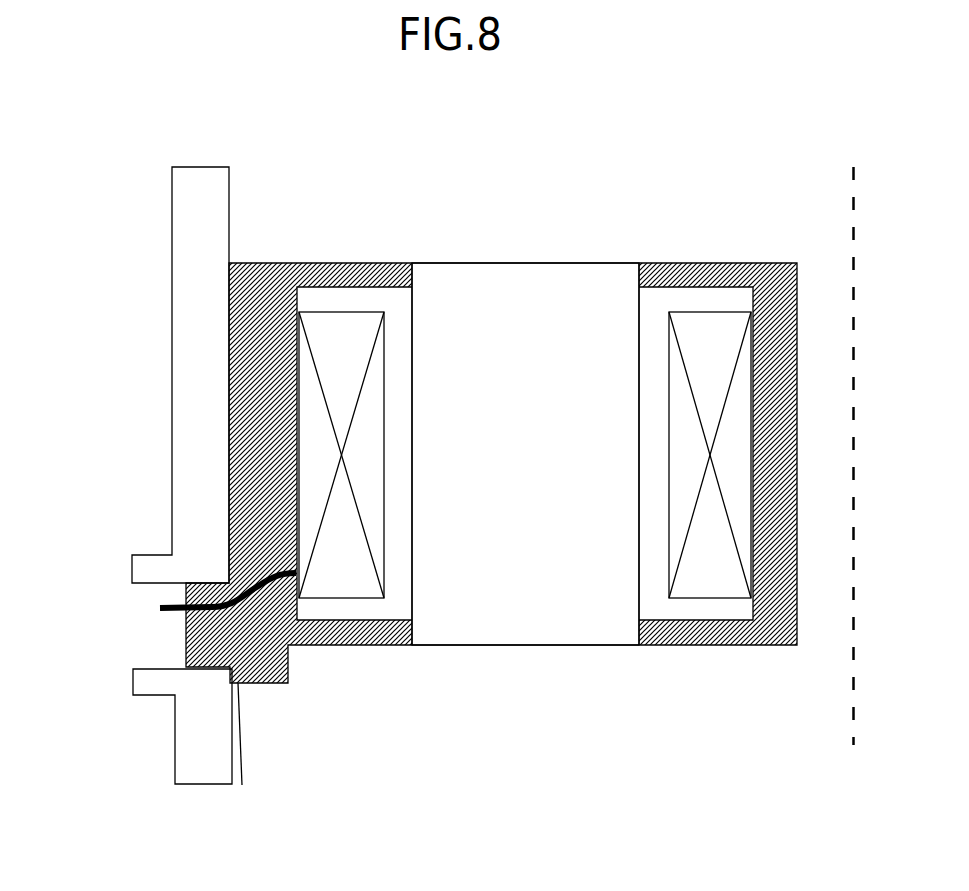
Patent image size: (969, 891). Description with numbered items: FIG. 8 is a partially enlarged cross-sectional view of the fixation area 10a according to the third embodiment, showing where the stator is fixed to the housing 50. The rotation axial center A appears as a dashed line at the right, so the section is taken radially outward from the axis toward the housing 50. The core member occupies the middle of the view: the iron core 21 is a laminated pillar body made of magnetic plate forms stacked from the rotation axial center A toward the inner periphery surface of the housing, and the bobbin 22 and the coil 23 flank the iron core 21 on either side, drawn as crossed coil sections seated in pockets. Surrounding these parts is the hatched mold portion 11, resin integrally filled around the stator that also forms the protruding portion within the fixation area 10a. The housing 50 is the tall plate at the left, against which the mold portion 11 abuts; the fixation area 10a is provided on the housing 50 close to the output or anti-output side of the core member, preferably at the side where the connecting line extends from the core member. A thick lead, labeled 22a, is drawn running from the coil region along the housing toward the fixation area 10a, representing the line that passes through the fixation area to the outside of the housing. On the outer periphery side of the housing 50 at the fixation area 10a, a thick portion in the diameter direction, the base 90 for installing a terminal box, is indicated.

The mold portion 11 is at (287, 263).
The iron core 21 is at (502, 280).
The bobbin 22 is at (680, 298).
The coil 23 is at (339, 323).
The lead wire of coil 22a is at (220, 603).
The housing 50 is at (207, 247).
The base 90 is at (137, 567).
The fixation area 10a is at (177, 670).
The rotation axial center A is at (844, 430).